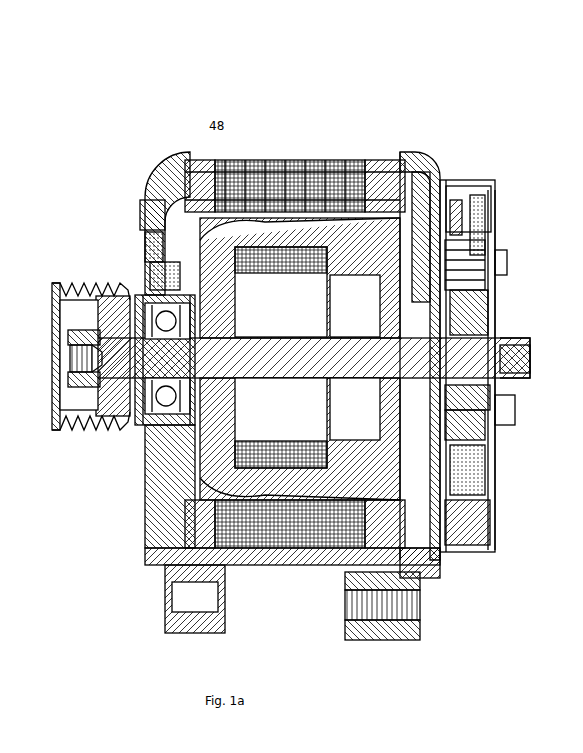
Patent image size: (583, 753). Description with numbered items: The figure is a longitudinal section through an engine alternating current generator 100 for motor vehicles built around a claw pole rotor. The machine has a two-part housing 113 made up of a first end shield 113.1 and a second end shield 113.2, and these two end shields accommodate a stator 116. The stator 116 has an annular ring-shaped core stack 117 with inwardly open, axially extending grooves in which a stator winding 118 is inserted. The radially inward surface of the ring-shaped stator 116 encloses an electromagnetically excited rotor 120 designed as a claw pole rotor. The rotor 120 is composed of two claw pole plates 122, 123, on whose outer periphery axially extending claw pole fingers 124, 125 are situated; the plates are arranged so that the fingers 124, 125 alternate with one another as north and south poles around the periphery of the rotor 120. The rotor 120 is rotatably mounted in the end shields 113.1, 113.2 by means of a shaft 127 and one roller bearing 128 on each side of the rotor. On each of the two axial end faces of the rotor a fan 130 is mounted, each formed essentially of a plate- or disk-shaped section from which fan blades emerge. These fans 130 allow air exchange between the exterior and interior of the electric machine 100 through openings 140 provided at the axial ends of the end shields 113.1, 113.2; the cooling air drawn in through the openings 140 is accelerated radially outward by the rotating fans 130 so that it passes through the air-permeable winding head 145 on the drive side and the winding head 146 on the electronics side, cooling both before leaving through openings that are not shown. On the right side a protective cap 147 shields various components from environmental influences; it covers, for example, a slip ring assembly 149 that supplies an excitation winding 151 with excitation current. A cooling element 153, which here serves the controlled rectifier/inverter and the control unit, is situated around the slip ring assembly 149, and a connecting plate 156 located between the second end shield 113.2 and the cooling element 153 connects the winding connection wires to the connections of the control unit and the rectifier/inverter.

The engine alternating current generator 100 is at (452, 92).
The two-part housing 113 is at (259, 327).
The first end shield 113.1 is at (172, 152).
The second end shield 113.2 is at (400, 160).
The stator 116 is at (283, 148).
The core stack 117 is at (258, 160).
The stator winding 118 is at (322, 160).
The rotor 120 is at (150, 498).
The claw pole plate 122 is at (112, 418).
The claw pole plate 123 is at (500, 434).
The claw pole finger 124 is at (145, 203).
The claw pole finger 125 is at (428, 175).
The shaft 127 is at (83, 370).
The roller bearing 128 is at (140, 248).
The fan 130 is at (145, 215).
The opening 140 is at (142, 227).
The winding head 145 is at (202, 174).
The winding head 146 is at (373, 160).
The protective cap 147 is at (500, 465).
The slip ring assembly 149 is at (500, 383).
The excitation winding 151 is at (272, 562).
The cooling element 153 is at (500, 250).
The connecting plate 156 is at (500, 449).